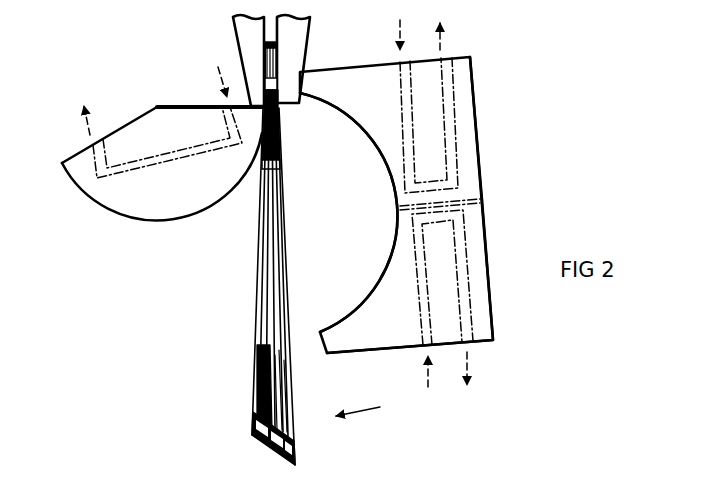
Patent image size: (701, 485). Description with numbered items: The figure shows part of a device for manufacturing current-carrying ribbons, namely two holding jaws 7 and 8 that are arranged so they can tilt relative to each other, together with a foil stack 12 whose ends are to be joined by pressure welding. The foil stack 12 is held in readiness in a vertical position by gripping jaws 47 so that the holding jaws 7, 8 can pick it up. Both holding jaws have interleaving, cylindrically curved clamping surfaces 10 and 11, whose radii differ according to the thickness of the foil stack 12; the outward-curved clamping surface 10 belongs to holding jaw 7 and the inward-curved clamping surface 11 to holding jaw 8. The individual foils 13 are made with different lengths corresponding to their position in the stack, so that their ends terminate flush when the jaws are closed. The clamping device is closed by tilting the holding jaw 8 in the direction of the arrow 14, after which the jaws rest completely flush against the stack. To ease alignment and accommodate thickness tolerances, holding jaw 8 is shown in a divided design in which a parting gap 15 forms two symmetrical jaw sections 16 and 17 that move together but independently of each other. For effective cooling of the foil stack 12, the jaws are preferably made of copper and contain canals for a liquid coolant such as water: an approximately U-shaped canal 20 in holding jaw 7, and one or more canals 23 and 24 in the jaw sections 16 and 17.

The holding jaw 7 is at (137, 118).
The holding jaw 8 is at (504, 89).
The clamping surface 10 is at (113, 211).
The clamping surface 11 is at (393, 250).
The foil stack 12 is at (261, 283).
The individual foils 13 is at (257, 358).
The arrow 14 is at (363, 414).
The parting gap 15 is at (470, 204).
The jaw section 16 is at (483, 293).
The jaw section 17 is at (468, 147).
The canal 20 is at (182, 160).
The canal 23 is at (420, 291).
The canal 24 is at (405, 125).
The gripping jaws 47 is at (242, 32).